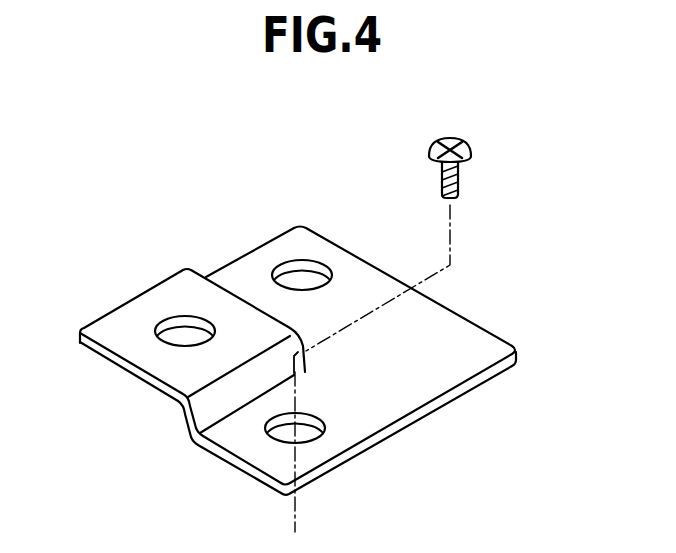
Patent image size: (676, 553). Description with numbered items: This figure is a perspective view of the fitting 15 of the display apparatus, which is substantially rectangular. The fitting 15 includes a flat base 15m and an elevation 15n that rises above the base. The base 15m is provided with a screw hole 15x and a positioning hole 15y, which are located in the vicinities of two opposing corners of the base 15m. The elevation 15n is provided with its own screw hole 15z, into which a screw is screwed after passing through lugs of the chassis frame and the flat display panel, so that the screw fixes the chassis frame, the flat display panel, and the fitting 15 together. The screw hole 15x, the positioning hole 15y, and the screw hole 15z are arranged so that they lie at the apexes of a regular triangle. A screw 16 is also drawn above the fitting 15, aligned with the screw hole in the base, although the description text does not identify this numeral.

The fitting 15 is at (310, 350).
The base 15m is at (483, 350).
The elevation 15n is at (123, 332).
The screw hole 15x is at (303, 420).
The positioning hole 15y is at (297, 262).
The screw hole 15z is at (183, 316).
The screw 16 is at (468, 142).